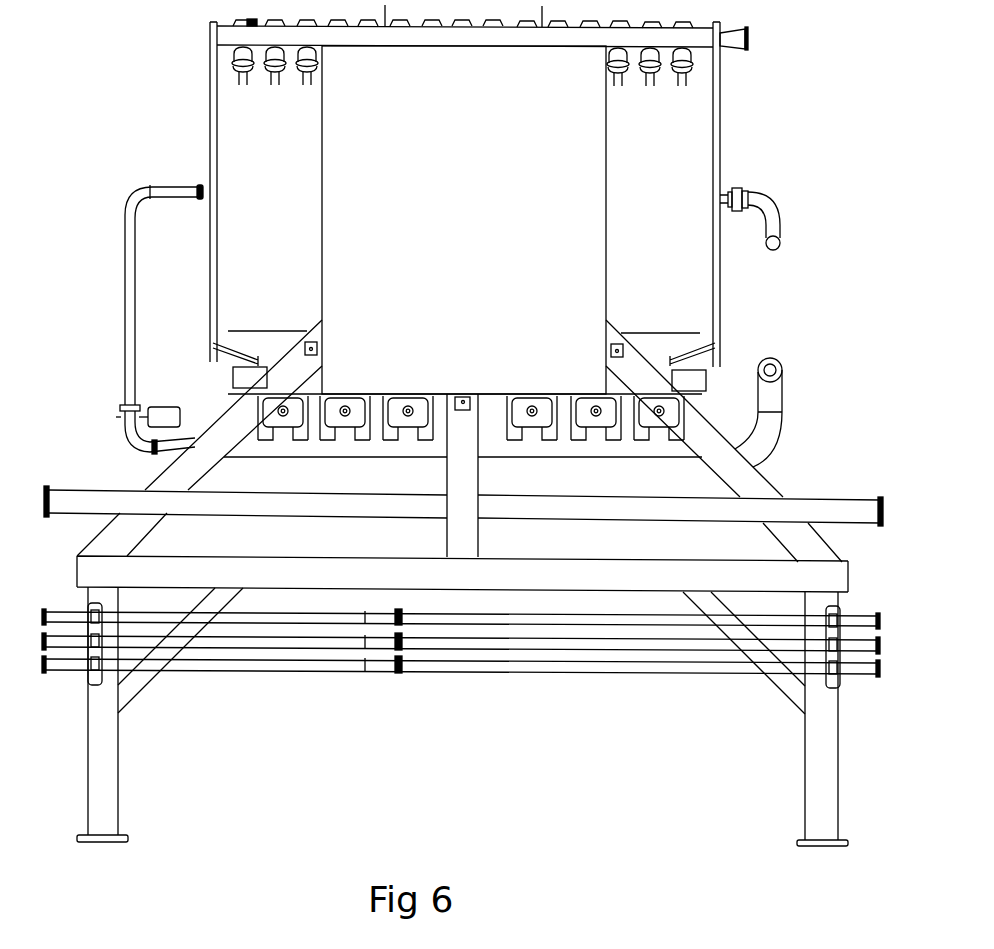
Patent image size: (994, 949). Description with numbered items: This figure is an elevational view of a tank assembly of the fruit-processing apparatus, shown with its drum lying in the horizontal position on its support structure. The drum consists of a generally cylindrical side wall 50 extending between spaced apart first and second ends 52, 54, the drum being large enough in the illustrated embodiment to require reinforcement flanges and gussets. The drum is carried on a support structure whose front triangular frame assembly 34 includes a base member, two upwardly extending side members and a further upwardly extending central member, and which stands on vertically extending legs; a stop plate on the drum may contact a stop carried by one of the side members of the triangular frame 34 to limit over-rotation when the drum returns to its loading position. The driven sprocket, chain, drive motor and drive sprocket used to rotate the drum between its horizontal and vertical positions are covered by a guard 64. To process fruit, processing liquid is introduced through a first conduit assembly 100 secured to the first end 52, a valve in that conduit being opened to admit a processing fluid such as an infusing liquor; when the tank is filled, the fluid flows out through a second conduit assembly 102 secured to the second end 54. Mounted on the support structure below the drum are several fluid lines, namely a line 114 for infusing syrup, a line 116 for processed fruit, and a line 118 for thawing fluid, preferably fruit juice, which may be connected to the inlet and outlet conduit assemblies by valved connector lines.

The front triangular frame assembly 34 is at (772, 485).
The cylindrical side wall 50 is at (673, 215).
The first end 52 is at (724, 140).
The second end 54 is at (208, 262).
The guard 64 is at (462, 230).
The first conduit assembly 100 is at (768, 209).
The second conduit assembly 102 is at (167, 187).
The line for infusing syrup 114 is at (343, 647).
The line for processed fruit 116 is at (263, 670).
The line for thawing fluid 118 is at (465, 623).